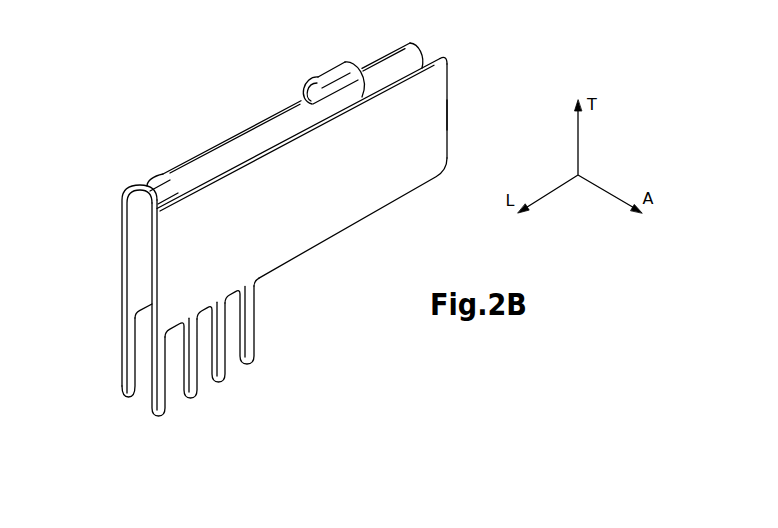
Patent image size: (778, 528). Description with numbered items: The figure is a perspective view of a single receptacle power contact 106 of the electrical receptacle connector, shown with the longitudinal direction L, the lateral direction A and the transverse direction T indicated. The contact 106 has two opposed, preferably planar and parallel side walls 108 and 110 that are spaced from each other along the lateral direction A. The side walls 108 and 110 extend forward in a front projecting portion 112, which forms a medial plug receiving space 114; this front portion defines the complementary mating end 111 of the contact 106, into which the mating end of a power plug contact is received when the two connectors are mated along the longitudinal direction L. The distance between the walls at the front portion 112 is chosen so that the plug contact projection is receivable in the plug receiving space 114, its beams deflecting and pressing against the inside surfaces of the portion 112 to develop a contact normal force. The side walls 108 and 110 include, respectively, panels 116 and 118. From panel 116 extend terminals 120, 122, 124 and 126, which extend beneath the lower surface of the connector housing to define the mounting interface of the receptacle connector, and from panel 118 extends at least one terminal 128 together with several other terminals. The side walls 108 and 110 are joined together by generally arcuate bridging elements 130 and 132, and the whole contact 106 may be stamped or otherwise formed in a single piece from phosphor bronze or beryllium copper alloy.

The receptacle power contact 106 is at (131, 116).
The side wall 108 is at (318, 229).
The side wall 110 is at (219, 116).
The mating end 111 is at (482, 138).
The front projecting portion 112 is at (480, 90).
The plug receiving space 114 is at (430, 40).
The panel 116 is at (262, 253).
The panel 118 is at (139, 240).
The terminal 120 is at (162, 418).
The terminal 122 is at (189, 398).
The terminal 124 is at (214, 382).
The terminal 126 is at (255, 363).
The terminal 128 is at (130, 399).
The arcuate bridging element 130 is at (147, 184).
The arcuate bridging element 132 is at (322, 80).